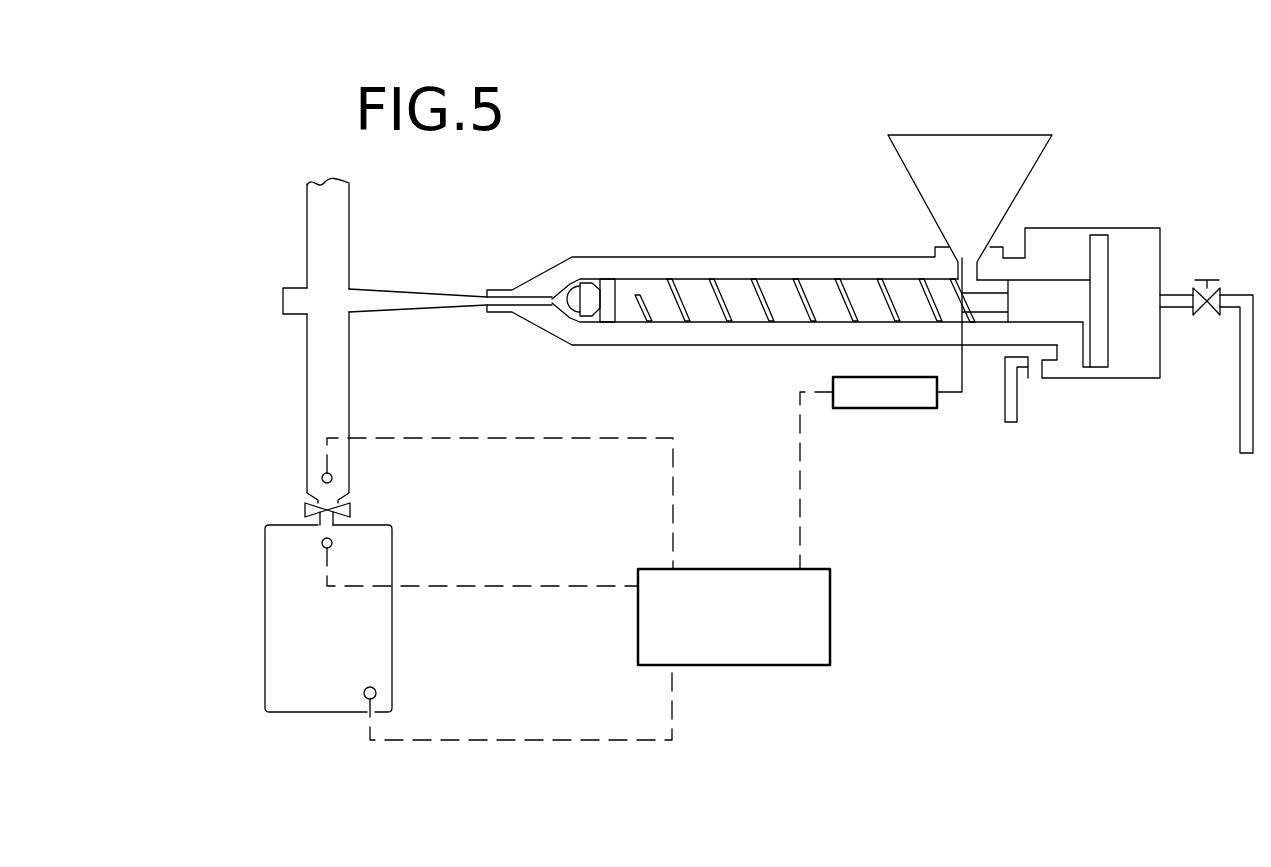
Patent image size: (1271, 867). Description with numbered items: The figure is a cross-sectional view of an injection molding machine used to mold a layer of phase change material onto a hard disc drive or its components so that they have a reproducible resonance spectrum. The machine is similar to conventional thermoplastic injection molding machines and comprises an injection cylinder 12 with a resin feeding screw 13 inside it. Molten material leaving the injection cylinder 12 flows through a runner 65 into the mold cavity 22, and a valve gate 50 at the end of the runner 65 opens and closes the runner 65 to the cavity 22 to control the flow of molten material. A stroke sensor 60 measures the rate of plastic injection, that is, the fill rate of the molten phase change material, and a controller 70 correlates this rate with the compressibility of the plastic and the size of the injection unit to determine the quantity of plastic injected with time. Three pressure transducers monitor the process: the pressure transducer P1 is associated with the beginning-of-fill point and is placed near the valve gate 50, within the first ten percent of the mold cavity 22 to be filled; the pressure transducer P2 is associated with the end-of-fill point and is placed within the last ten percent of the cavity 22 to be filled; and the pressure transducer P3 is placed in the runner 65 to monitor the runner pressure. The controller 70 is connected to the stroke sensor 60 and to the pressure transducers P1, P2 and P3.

The injection cylinder 12 is at (767, 257).
The resin feeding screw 13 is at (747, 302).
The mold cavity 22 is at (288, 622).
The valve gate 50 is at (305, 510).
The stroke sensor 60 is at (890, 412).
The runner 65 is at (330, 390).
The controller 70 is at (778, 665).
The pressure transducer P1 is at (349, 543).
The pressure transducer P2 is at (392, 693).
The pressure transducer P3 is at (345, 478).